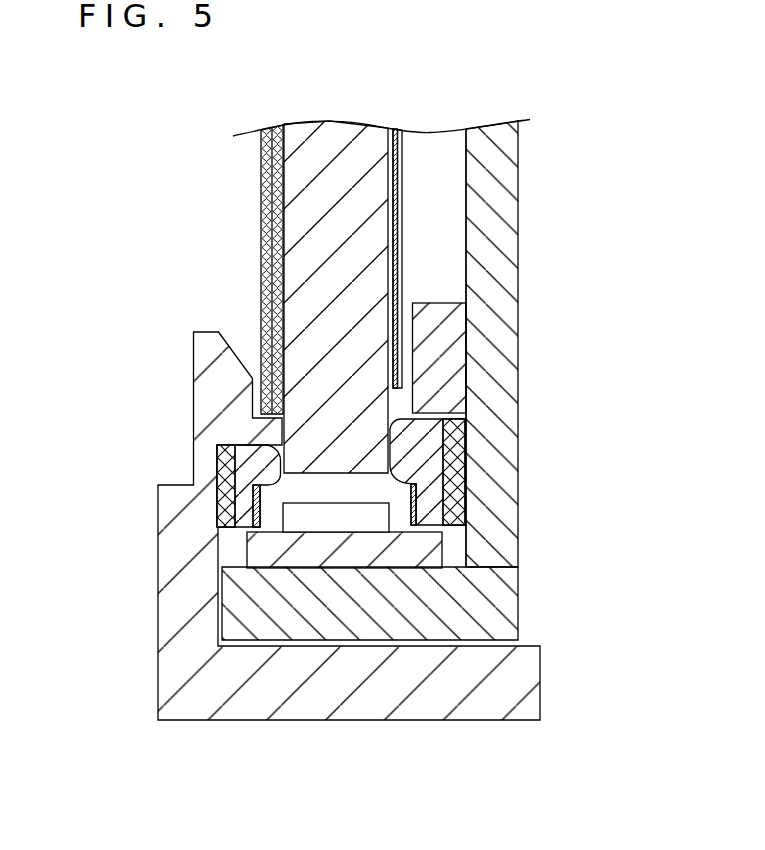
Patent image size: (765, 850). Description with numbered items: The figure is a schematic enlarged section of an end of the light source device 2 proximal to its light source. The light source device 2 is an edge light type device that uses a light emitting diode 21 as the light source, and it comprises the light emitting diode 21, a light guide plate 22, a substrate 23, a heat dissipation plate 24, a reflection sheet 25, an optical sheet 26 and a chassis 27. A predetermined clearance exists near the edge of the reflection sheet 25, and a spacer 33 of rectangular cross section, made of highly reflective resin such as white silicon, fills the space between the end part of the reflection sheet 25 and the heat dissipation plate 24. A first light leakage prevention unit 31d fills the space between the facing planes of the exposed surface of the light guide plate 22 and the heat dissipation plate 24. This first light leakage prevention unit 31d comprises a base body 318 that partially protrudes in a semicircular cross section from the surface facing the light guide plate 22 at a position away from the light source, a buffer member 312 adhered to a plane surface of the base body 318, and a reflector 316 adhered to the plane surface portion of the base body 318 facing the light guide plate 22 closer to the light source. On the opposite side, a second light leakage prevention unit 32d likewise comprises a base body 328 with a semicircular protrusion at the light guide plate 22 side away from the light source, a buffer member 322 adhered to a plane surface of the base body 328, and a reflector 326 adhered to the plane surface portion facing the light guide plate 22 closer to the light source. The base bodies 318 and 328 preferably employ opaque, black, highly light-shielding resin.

The light source device 2 is at (125, 170).
The light emitting diode 21 is at (321, 519).
The light guide plate 22 is at (343, 128).
The substrate 23 is at (395, 557).
The heat dissipation plate 24 is at (495, 398).
The reflection sheet 25 is at (400, 148).
The optical sheet 26 is at (262, 181).
The chassis 27 is at (248, 707).
The spacer 33 is at (447, 330).
The buffer member 312 is at (457, 452).
The reflector 316 is at (423, 513).
The base body 318 is at (427, 477).
The first light leakage prevention unit 31d is at (455, 541).
The buffer member 322 is at (222, 459).
The reflector 326 is at (254, 506).
The base body 328 is at (242, 493).
The second light leakage prevention unit 32d is at (228, 541).